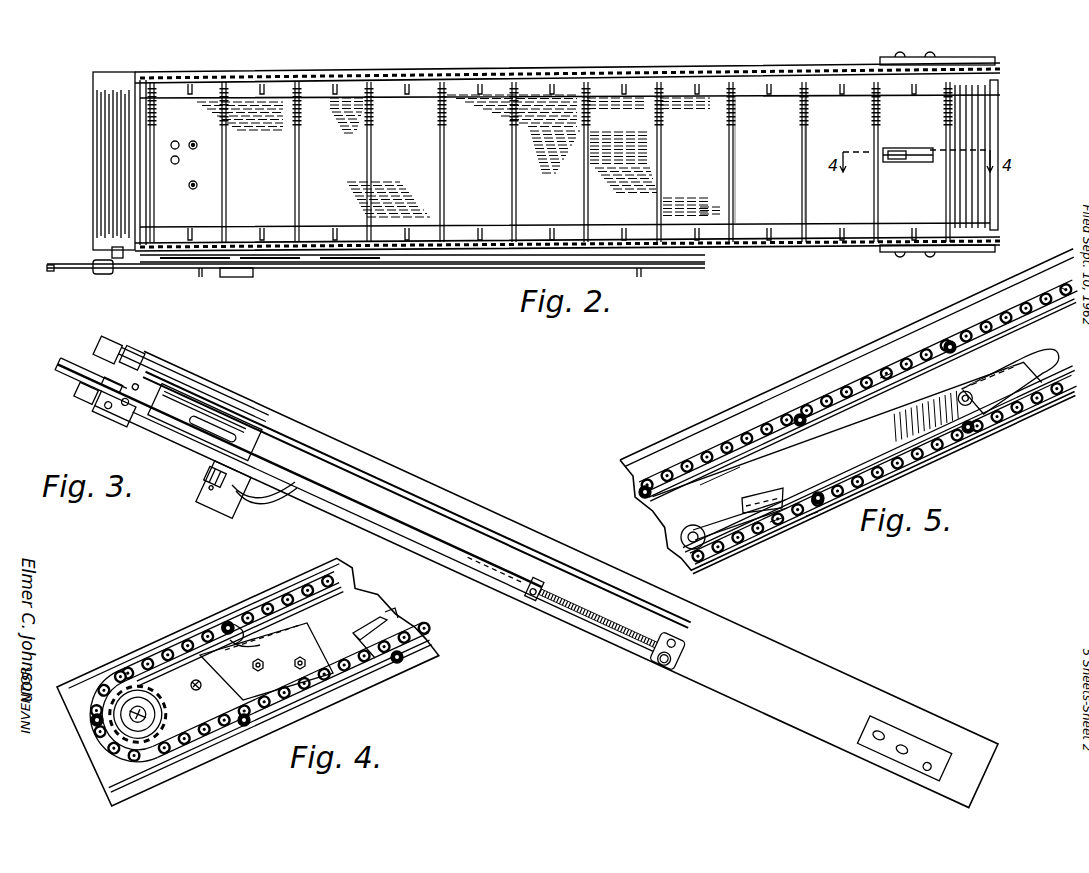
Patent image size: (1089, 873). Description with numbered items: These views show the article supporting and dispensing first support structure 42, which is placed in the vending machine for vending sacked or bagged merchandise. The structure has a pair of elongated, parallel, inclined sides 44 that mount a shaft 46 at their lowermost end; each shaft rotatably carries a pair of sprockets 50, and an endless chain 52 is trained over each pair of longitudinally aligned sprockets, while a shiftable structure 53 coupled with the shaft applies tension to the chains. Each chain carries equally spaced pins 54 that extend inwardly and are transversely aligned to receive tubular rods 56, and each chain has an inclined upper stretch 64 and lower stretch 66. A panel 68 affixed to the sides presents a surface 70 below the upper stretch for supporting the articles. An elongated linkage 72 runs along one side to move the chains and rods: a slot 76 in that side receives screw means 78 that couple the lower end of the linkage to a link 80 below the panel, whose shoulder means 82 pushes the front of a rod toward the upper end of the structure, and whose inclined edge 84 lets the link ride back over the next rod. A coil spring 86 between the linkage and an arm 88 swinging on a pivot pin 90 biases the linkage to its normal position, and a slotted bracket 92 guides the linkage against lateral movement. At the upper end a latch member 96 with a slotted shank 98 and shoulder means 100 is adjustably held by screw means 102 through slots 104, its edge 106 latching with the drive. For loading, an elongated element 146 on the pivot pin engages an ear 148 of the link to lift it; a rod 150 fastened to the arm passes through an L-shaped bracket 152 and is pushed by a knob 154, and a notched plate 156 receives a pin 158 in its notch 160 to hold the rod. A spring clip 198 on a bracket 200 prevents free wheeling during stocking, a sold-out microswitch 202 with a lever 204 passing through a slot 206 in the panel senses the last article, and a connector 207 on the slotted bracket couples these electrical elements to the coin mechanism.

In FIG. 2, the first support structure 42 is at (979, 64).
In FIG. 2, the sides 44 is at (745, 68).
In FIG. 3, the sides 44 is at (793, 664).
In FIG. 5, the sides 44 is at (775, 398).
In FIG. 3, the shaft 46 is at (962, 755).
In FIG. 4, the sprockets 50 is at (136, 742).
In FIG. 2, the chain 52 is at (625, 243).
In FIG. 5, the chain 52 is at (1059, 287).
In FIG. 3, the shiftable structure 53 is at (935, 735).
In FIG. 2, the pins 54 is at (405, 73).
In FIG. 4, the pins 54 is at (302, 585).
In FIG. 5, the pins 54 is at (723, 455).
In FIG. 2, the tubular rods 56 is at (372, 150).
In FIG. 4, the tubular rods 56 is at (226, 620).
In FIG. 5, the tubular rods 56 is at (951, 341).
In FIG. 5, the upper stretch 64 is at (884, 376).
In FIG. 5, the lower stretch 66 is at (710, 561).
In FIG. 5, the panel 68 is at (718, 477).
In FIG. 2, the surface 70 is at (793, 165).
In FIG. 4, the surface 70 is at (372, 596).
In FIG. 3, the linkage 72 is at (407, 537).
In FIG. 5, the slot 76 is at (1036, 356).
In FIG. 5, the screw means 78 is at (963, 390).
In FIG. 5, the link 80 is at (868, 440).
In FIG. 5, the shoulder means 82 is at (812, 514).
In FIG. 5, the inclined edge 84 is at (776, 522).
In FIG. 3, the coil spring 86 is at (604, 624).
In FIG. 3, the arm 88 is at (678, 641).
In FIG. 3, the pivot pin 90 is at (665, 656).
In FIG. 5, the pivot pin 90 is at (690, 527).
In FIG. 3, the slotted bracket 92 is at (205, 502).
In FIG. 3, the latch member 96 is at (68, 360).
In FIG. 3, the slotted shank 98 is at (104, 382).
In FIG. 3, the shoulder means 100 is at (77, 392).
In FIG. 3, the screw means 102 is at (108, 410).
In FIG. 3, the slots 104 is at (126, 408).
In FIG. 3, the edge 106 is at (98, 403).
In FIG. 5, the elongated element 146 is at (714, 522).
In FIG. 5, the ear 148 is at (762, 490).
In FIG. 3, the rod 150 is at (404, 488).
In FIG. 3, the L-shaped bracket 152 is at (148, 360).
In FIG. 3, the knob 154 is at (110, 342).
In FIG. 3, the notched plate 156 is at (250, 420).
In FIG. 3, the pin 158 is at (210, 393).
In FIG. 3, the notch 160 is at (225, 408).
In FIG. 4, the spring clip 198 is at (352, 655).
In FIG. 4, the bracket 200 is at (245, 700).
In FIG. 4, the sold-out microswitch 202 is at (400, 626).
In FIG. 2, the lever 204 is at (915, 150).
In FIG. 4, the lever 204 is at (243, 625).
In FIG. 2, the slot 206 is at (895, 163).
In FIG. 4, the slot 206 is at (203, 686).
In FIG. 3, the connector 207 is at (218, 490).